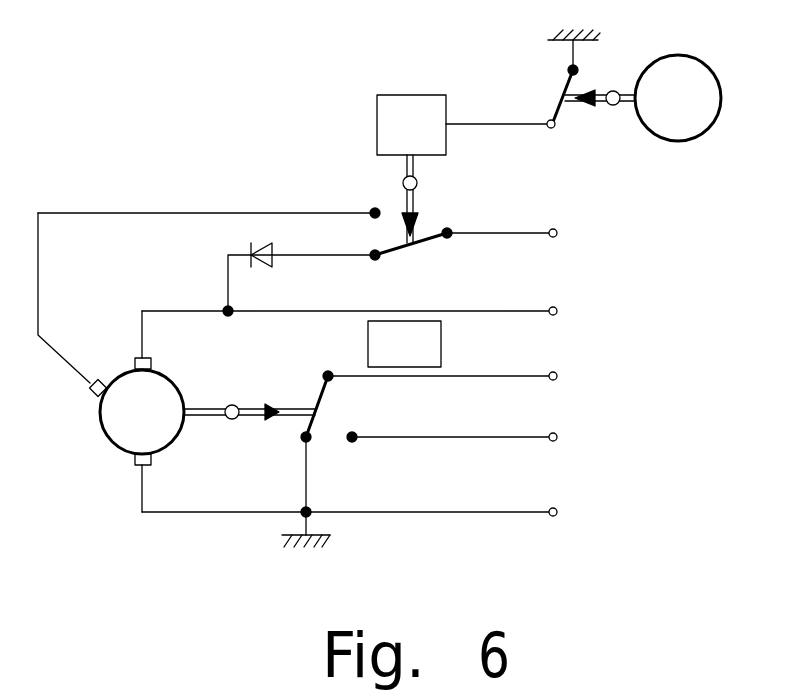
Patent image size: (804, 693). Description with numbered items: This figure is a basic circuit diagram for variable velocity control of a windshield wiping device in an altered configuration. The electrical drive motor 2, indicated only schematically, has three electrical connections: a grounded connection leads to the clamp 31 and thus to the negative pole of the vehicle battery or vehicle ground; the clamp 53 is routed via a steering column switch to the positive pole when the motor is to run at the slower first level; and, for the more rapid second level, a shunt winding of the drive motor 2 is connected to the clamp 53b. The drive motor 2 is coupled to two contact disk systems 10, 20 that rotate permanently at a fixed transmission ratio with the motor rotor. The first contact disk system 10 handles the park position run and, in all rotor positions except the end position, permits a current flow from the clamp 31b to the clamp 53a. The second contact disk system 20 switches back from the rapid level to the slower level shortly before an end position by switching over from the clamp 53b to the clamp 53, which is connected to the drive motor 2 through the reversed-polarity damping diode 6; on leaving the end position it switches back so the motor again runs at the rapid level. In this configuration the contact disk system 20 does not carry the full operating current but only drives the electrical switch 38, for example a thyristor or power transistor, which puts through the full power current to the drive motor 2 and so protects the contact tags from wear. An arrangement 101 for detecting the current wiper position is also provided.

The electrical drive motor 2 is at (707, 82).
The reversed-polarity damping diode 6 is at (263, 244).
The first contact disk system 10 is at (340, 473).
The second contact disk system 20 is at (551, 146).
The clamp 31 is at (367, 290).
The clamp 31b is at (469, 242).
The electrical switch 38 is at (413, 112).
The clamp 53 is at (369, 273).
The clamp 53a is at (479, 438).
The clamp 53b is at (324, 212).
The arrangement for detecting the current wiper position 101 is at (441, 345).